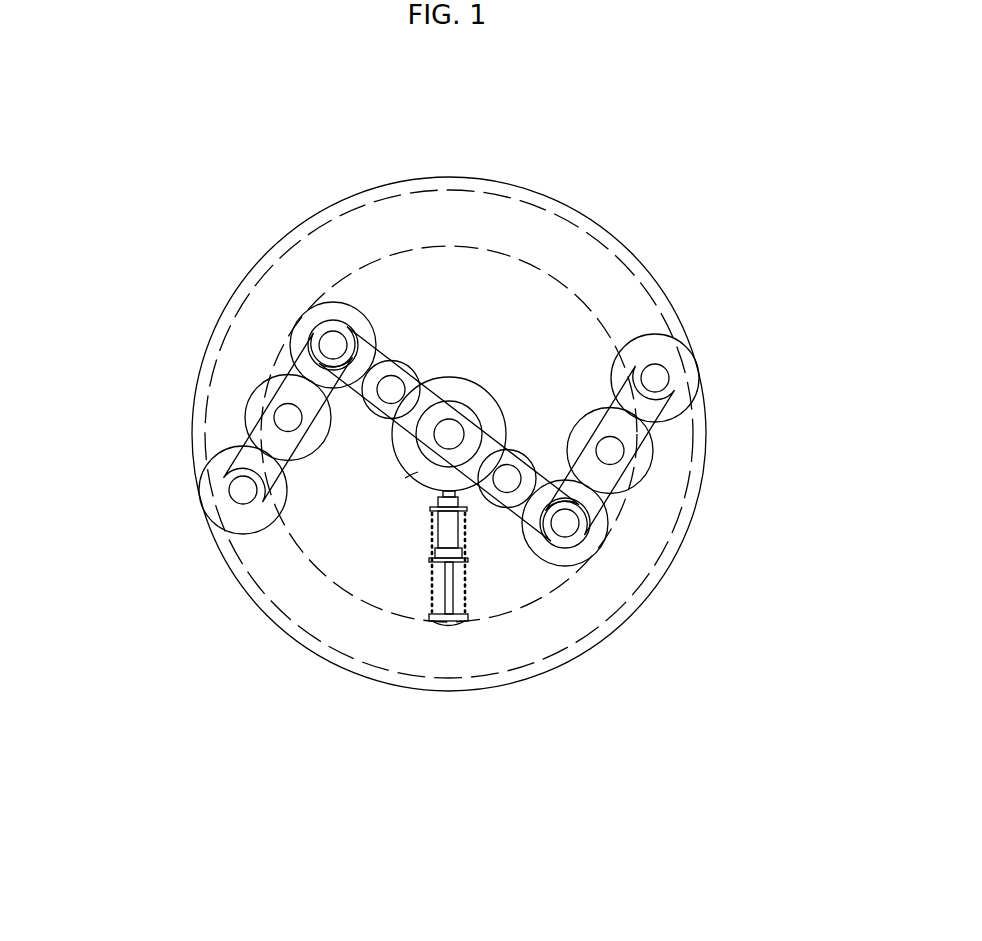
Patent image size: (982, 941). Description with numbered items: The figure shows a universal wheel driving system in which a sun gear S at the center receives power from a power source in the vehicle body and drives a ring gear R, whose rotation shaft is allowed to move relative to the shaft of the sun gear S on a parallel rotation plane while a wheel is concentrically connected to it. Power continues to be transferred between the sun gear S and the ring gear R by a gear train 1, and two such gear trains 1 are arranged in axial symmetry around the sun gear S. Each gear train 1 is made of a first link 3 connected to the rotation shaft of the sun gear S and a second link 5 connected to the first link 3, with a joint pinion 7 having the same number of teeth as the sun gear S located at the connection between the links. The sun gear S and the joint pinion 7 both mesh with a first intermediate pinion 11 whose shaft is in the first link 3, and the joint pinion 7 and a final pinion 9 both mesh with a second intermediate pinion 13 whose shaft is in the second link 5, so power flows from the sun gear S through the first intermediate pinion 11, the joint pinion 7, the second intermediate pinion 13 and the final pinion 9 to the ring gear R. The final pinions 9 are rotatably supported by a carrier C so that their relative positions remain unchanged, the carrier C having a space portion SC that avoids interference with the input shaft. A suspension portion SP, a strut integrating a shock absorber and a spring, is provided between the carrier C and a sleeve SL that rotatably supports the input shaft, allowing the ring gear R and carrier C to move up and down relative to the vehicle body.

The gear train 1 is at (449, 439).
The first link 3 is at (388, 361).
The second link 5 is at (283, 362).
The joint pinion 7 is at (318, 312).
The final pinion 9 is at (213, 473).
The first intermediate pinion 11 is at (373, 415).
The second intermediate pinion 13 is at (255, 410).
The sun gear S is at (462, 402).
The suspension portion SP is at (413, 590).
The sleeve SL is at (420, 473).
The ring gear R is at (517, 186).
The space portion SC is at (508, 258).
The carrier C is at (627, 246).